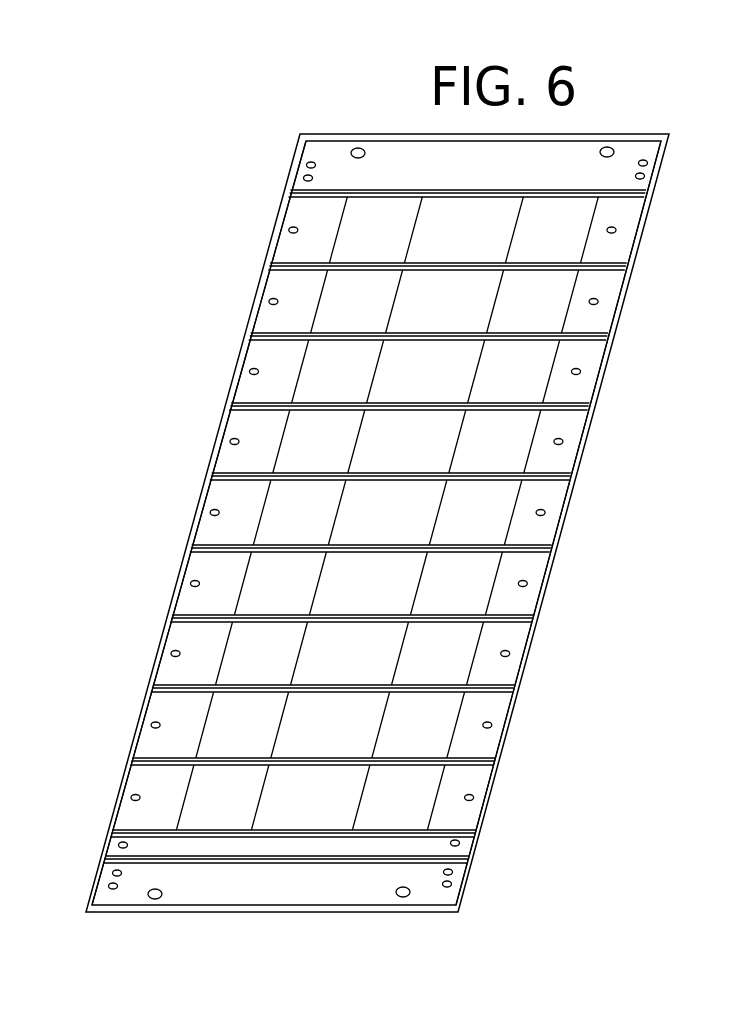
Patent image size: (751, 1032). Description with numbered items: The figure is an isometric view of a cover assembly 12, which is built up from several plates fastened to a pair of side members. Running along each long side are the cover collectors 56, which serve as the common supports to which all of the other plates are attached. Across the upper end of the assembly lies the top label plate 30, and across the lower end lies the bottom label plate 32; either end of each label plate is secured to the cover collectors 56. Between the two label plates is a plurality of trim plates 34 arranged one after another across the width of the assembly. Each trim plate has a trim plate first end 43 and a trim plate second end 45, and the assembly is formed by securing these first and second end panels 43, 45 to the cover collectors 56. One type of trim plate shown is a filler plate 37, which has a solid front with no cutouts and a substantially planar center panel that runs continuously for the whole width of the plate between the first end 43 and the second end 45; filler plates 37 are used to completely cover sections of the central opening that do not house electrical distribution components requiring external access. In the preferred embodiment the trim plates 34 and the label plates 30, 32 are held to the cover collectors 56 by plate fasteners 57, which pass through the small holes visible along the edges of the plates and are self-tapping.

The cover assembly 12 is at (61, 341).
The top label plate 30 is at (571, 171).
The bottom label plate 32 is at (140, 886).
The trim plates 34 is at (556, 493).
The filler plates 37 is at (433, 844).
The trim plate first end 43 is at (570, 425).
The trim plate second end 45 is at (245, 428).
The cover collectors 56 is at (193, 510).
The plate fasteners 57 is at (192, 583).